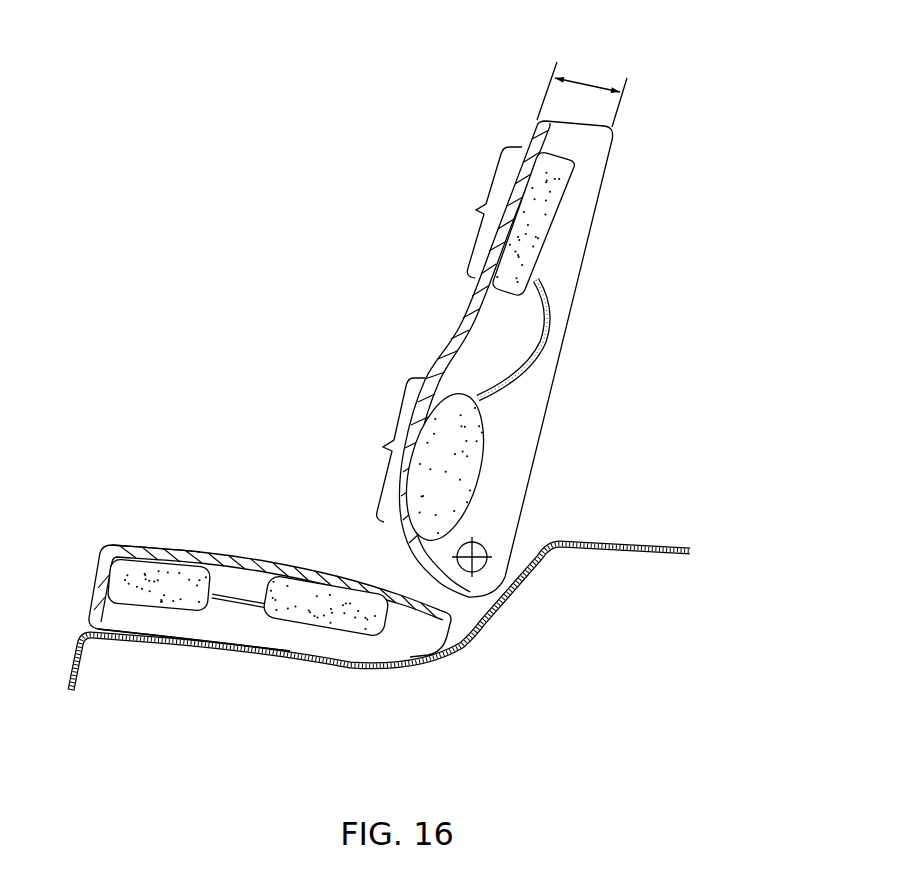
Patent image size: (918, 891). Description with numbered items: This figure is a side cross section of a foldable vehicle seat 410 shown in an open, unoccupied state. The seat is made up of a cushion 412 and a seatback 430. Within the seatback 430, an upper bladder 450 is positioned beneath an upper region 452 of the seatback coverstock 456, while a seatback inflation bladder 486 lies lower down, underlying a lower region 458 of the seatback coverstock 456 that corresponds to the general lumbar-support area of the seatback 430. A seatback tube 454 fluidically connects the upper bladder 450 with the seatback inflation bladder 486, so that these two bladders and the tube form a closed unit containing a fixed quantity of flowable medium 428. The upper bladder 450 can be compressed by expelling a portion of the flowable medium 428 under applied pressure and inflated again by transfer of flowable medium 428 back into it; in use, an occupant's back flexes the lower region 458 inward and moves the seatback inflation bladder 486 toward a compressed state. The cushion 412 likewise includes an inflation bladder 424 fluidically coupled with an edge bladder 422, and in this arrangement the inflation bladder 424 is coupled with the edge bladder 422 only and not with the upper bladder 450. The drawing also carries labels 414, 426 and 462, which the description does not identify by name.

The vehicle seat 410 is at (712, 152).
The cushion 412 is at (184, 666).
The cushion cover / top surface 414 is at (104, 570).
The edge bladder 422 is at (142, 608).
The inflation bladder 424 is at (367, 633).
The cushion connecting tube 426 is at (233, 605).
The flowable medium 428 is at (320, 615).
The seatback 430 is at (598, 363).
The upper bladder 450 is at (550, 210).
The upper region 452 is at (481, 212).
The seatback tube 454 is at (547, 303).
The seatback coverstock 456 is at (463, 328).
The lower region 458 is at (384, 450).
The seat back thickness 462 is at (588, 84).
The seatback inflation bladder 486 is at (468, 465).